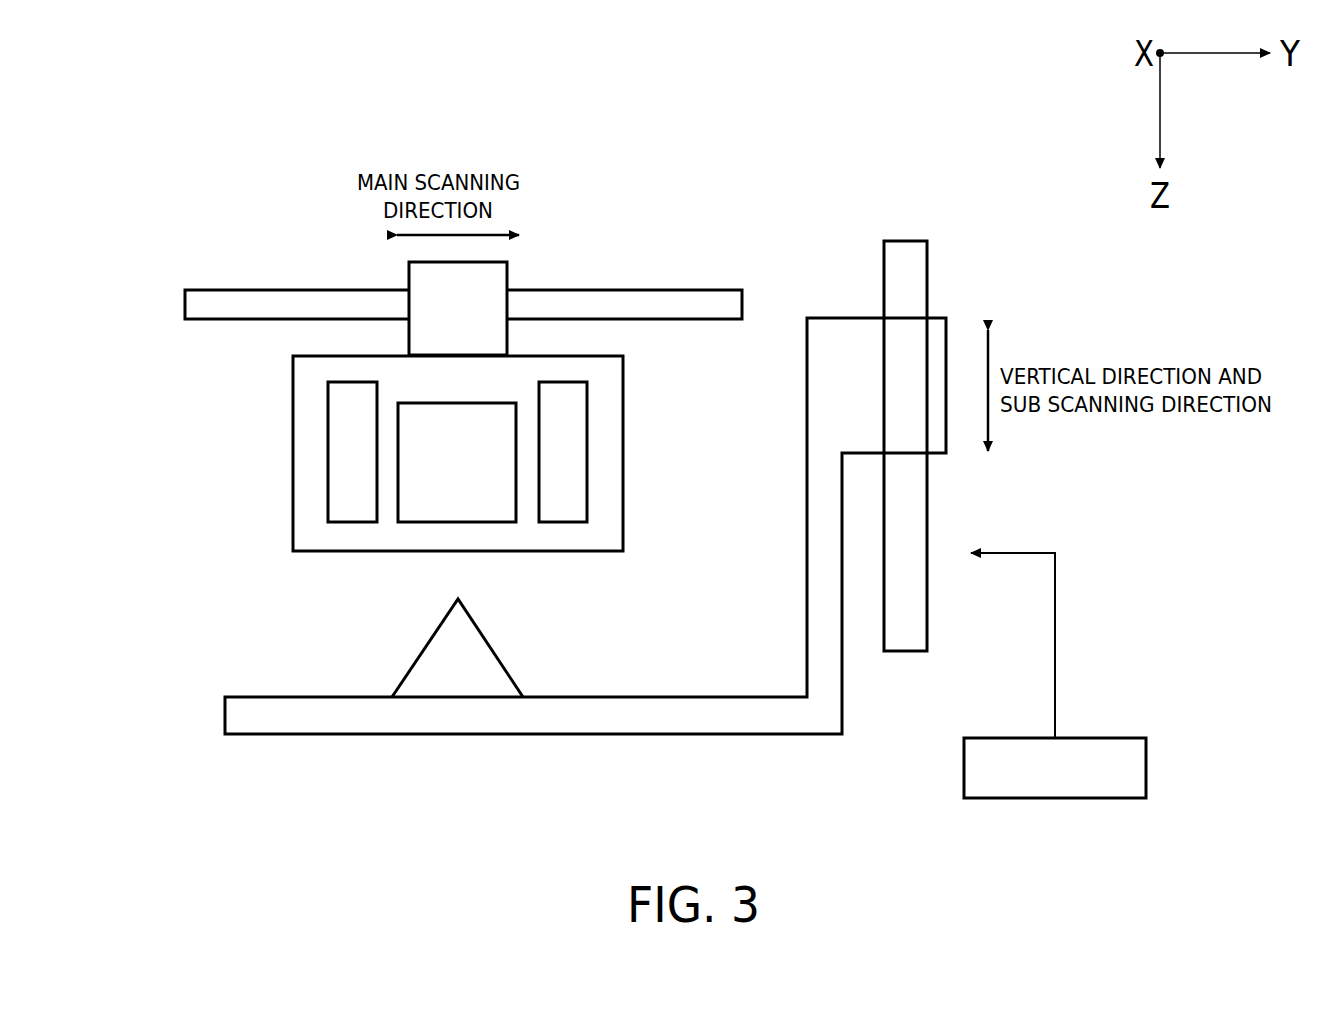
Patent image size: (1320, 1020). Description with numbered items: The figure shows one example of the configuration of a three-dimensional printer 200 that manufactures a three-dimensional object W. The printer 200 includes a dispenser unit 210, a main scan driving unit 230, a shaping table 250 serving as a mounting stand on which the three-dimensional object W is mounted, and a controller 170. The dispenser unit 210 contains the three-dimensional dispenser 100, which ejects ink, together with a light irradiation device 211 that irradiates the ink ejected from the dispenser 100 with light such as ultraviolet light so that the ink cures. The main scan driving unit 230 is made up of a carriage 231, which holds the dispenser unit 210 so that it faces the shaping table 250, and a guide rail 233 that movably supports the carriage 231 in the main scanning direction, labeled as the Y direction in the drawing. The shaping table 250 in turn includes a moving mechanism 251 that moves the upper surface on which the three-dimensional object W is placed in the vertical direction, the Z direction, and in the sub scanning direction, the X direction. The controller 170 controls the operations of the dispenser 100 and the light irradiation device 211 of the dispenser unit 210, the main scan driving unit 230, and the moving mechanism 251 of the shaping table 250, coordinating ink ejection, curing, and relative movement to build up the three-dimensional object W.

The 3D printer 200 is at (847, 143).
The dispenser unit 210 is at (290, 396).
The light irradiation device 211 is at (328, 477).
The 3D dispenser 100 is at (428, 522).
The main scan driving unit 230 is at (702, 192).
The carriage 231 is at (507, 335).
The guide rail 233 is at (663, 290).
The shaping table 250 is at (305, 735).
The moving mechanism 251 is at (957, 303).
The controller 170 is at (1108, 738).
The three-dimensional object W is at (498, 658).